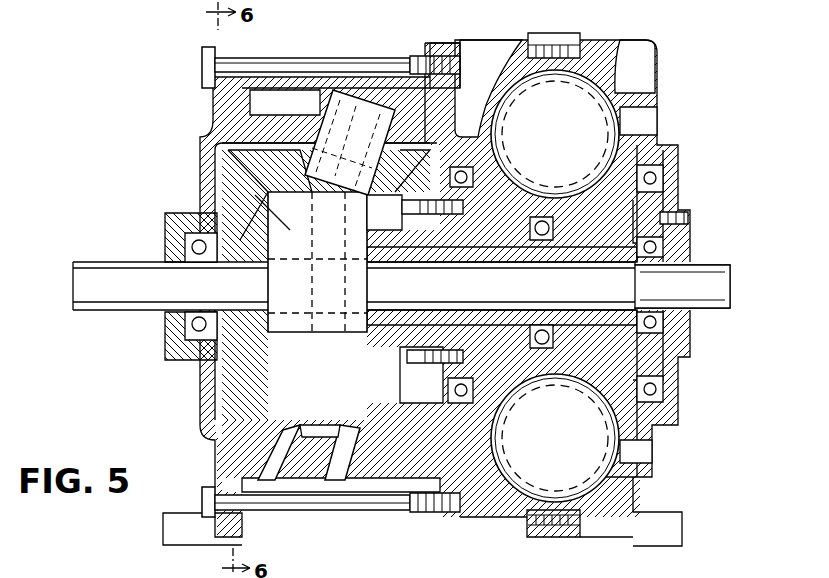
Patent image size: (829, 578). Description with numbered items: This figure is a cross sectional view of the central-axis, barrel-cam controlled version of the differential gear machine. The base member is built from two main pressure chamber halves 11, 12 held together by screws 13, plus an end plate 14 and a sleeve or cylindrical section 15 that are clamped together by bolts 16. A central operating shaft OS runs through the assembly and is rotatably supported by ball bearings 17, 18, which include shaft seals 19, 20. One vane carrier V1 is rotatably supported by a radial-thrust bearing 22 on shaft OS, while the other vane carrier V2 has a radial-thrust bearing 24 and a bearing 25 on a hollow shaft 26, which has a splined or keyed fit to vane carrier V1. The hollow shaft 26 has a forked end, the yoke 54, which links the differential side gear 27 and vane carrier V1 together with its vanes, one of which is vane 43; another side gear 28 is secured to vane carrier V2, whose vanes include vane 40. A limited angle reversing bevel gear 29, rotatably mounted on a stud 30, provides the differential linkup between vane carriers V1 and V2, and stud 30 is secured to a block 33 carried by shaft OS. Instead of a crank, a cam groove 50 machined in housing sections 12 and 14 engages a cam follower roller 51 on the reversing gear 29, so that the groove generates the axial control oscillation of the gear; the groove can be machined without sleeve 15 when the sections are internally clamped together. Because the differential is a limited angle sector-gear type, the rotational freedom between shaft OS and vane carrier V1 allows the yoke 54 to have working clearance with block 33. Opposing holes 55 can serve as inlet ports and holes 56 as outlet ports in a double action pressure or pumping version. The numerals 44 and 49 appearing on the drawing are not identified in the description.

The main pressure chamber half 11 is at (679, 72).
The main pressure chamber half 12 is at (440, 45).
The screws 13 is at (590, 45).
The end plate 14 is at (200, 397).
The sleeve or cylindrical section 15 is at (260, 92).
The bolts 16 is at (350, 512).
The ball bearing 17 is at (166, 227).
The ball bearing 18 is at (692, 338).
The shaft seal 19 is at (166, 322).
The shaft seal 20 is at (695, 256).
The radial-thrust bearing 22 is at (665, 172).
The radial-thrust bearing 24 is at (432, 392).
The bearing 25 is at (548, 200).
The hollow shaft 26 is at (475, 263).
The differential side gear 27 is at (215, 157).
The side gear 28 is at (415, 212).
The reversing bevel gear 29 is at (278, 223).
The stud 30 is at (313, 264).
The block 33 is at (350, 302).
The vane 40 is at (571, 116).
The vane 43 is at (570, 427).
The valve port 44 is at (514, 470).
The chamber 49 is at (504, 72).
The cam groove 50 is at (288, 438).
The cam follower roller 51 is at (362, 93).
The yoke 54 is at (348, 378).
The holes 55 is at (660, 118).
The holes 56 is at (658, 456).
The central operating shaft OS is at (102, 262).
The vane carrier V1 is at (596, 236).
The vane carrier V2 is at (510, 226).